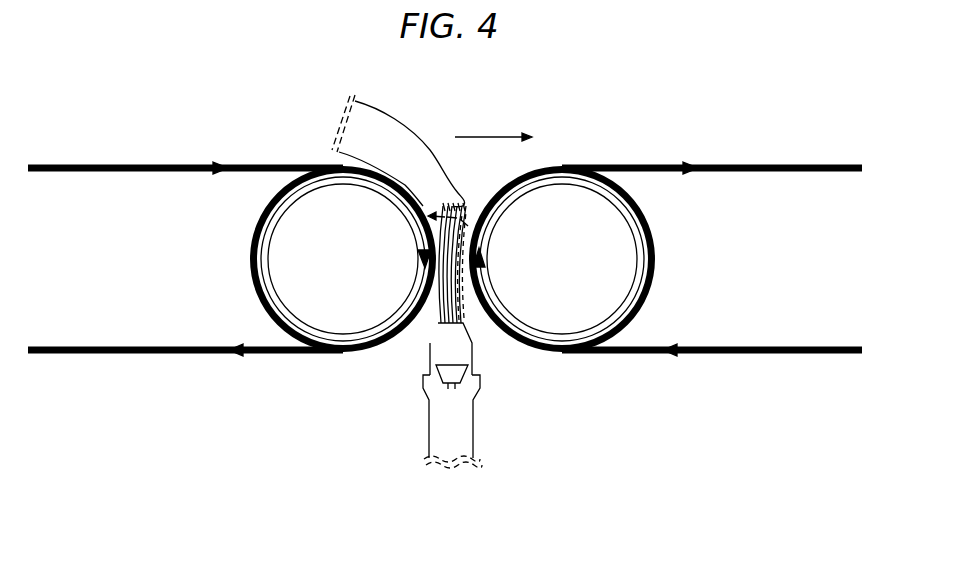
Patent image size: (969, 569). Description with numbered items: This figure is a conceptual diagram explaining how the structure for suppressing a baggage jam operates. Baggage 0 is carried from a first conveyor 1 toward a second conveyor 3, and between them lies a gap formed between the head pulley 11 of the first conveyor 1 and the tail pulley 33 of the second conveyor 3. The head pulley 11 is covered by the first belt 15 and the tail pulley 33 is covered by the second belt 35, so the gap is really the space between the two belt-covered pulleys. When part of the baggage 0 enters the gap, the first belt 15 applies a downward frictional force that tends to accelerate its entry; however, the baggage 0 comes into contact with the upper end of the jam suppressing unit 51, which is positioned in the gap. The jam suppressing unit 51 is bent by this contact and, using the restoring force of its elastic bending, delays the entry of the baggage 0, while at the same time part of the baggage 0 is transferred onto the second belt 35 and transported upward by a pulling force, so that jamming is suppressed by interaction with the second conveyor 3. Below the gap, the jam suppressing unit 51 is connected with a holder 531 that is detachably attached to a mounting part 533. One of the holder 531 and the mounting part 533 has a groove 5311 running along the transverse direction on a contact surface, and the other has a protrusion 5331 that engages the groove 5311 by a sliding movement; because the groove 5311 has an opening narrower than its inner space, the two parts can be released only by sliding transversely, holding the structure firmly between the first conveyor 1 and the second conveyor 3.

The baggage 0 is at (380, 130).
The first conveyor 1 is at (78, 366).
The second conveyor 3 is at (744, 368).
The head pulley 11 is at (252, 258).
The first belt 15 is at (87, 164).
The tail pulley 33 is at (653, 258).
The second belt 35 is at (777, 164).
The jam suppressing unit 51 is at (442, 348).
The holder 531 is at (434, 293).
The mounting part 533 is at (463, 430).
The groove 5311 is at (441, 378).
The protrusion 5331 is at (454, 373).